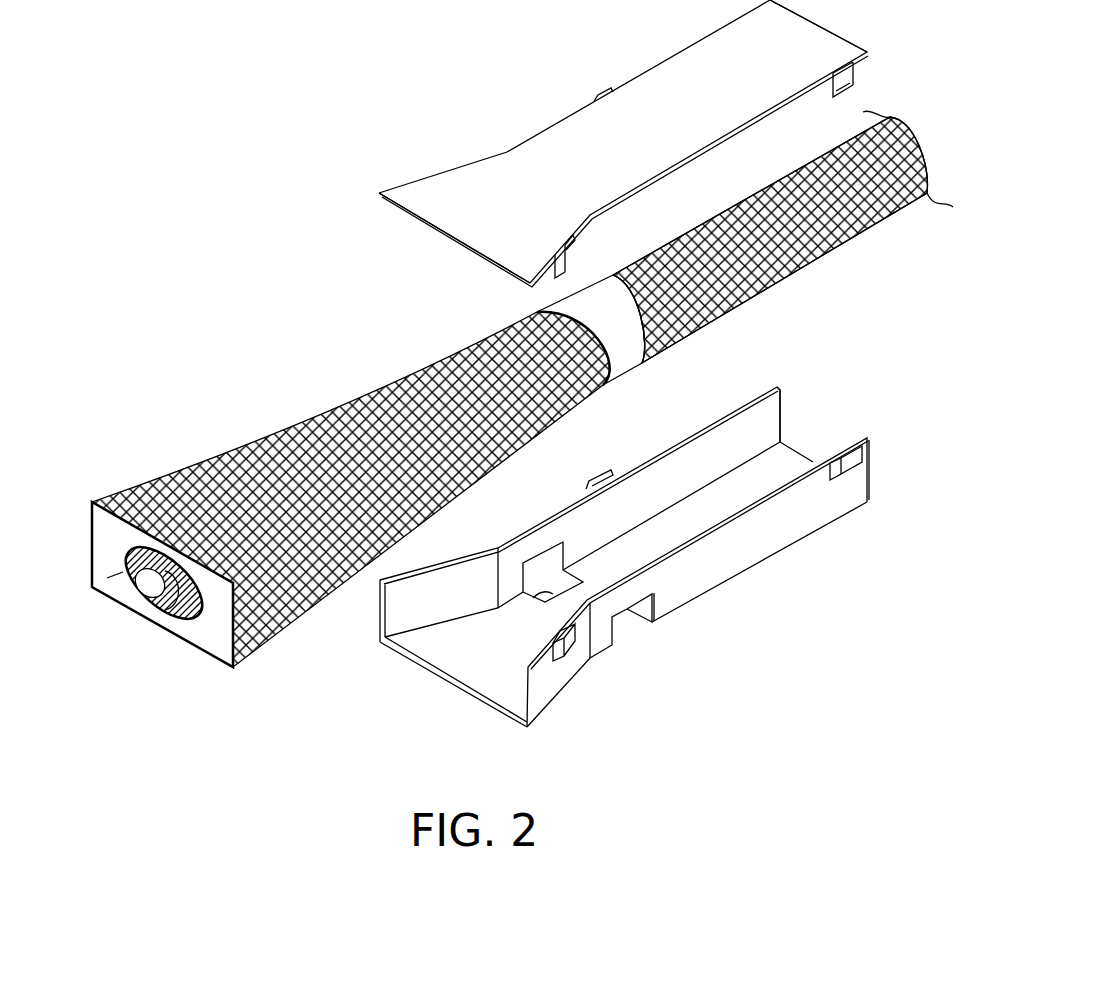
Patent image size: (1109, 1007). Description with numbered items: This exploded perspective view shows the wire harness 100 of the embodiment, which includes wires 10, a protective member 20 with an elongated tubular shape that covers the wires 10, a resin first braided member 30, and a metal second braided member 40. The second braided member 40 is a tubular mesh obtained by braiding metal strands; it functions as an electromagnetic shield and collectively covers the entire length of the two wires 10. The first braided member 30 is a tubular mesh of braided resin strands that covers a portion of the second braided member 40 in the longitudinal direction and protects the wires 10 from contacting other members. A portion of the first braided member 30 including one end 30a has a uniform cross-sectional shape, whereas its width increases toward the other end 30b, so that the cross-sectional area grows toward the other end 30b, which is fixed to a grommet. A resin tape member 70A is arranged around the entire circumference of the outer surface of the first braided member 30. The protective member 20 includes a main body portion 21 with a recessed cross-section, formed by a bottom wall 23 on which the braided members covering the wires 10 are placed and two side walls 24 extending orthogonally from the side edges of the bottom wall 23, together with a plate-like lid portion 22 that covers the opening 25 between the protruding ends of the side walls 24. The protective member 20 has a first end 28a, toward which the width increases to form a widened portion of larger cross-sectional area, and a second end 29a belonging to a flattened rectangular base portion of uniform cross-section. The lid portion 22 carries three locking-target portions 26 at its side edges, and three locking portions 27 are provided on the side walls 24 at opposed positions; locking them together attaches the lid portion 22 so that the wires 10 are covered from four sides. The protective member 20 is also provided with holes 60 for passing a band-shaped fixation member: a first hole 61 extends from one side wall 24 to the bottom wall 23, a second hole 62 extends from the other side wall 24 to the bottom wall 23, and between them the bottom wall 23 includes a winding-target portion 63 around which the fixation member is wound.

The wire harness 100 is at (284, 290).
The wires 10 is at (133, 590).
The protective member 20 is at (624, 369).
The main body portion 21 is at (739, 582).
The lid portion 22 is at (507, 148).
The bottom wall 23 is at (473, 680).
The side walls 24 is at (800, 518).
The opening 25 is at (768, 386).
The locking-target portions 26 is at (856, 78).
The locking portions 27 is at (863, 456).
The first end 28a is at (411, 216).
The second end 29a is at (834, 33).
The first braided member 30 is at (203, 462).
The one end 30a is at (670, 346).
The other end 30b is at (90, 528).
The second braided member 40 is at (842, 247).
The holes 60 is at (612, 565).
The first hole 61 is at (556, 563).
The second hole 62 is at (637, 622).
The winding-target portion 63 is at (533, 596).
The tape member 70A is at (632, 374).